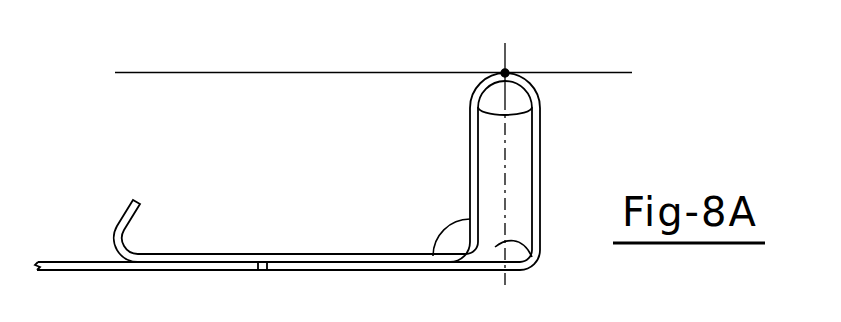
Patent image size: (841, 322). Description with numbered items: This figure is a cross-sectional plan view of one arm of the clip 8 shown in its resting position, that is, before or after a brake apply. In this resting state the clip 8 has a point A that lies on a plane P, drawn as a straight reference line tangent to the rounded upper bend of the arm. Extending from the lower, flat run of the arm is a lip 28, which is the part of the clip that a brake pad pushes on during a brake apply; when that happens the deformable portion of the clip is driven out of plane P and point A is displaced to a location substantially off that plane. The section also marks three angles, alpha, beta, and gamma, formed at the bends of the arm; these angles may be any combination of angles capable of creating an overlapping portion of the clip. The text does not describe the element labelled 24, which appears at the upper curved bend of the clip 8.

The clip 8 is at (267, 57).
The curved loop portion 24 is at (471, 88).
The lip 28 is at (137, 206).
The point A is at (506, 72).
The plane P is at (383, 74).